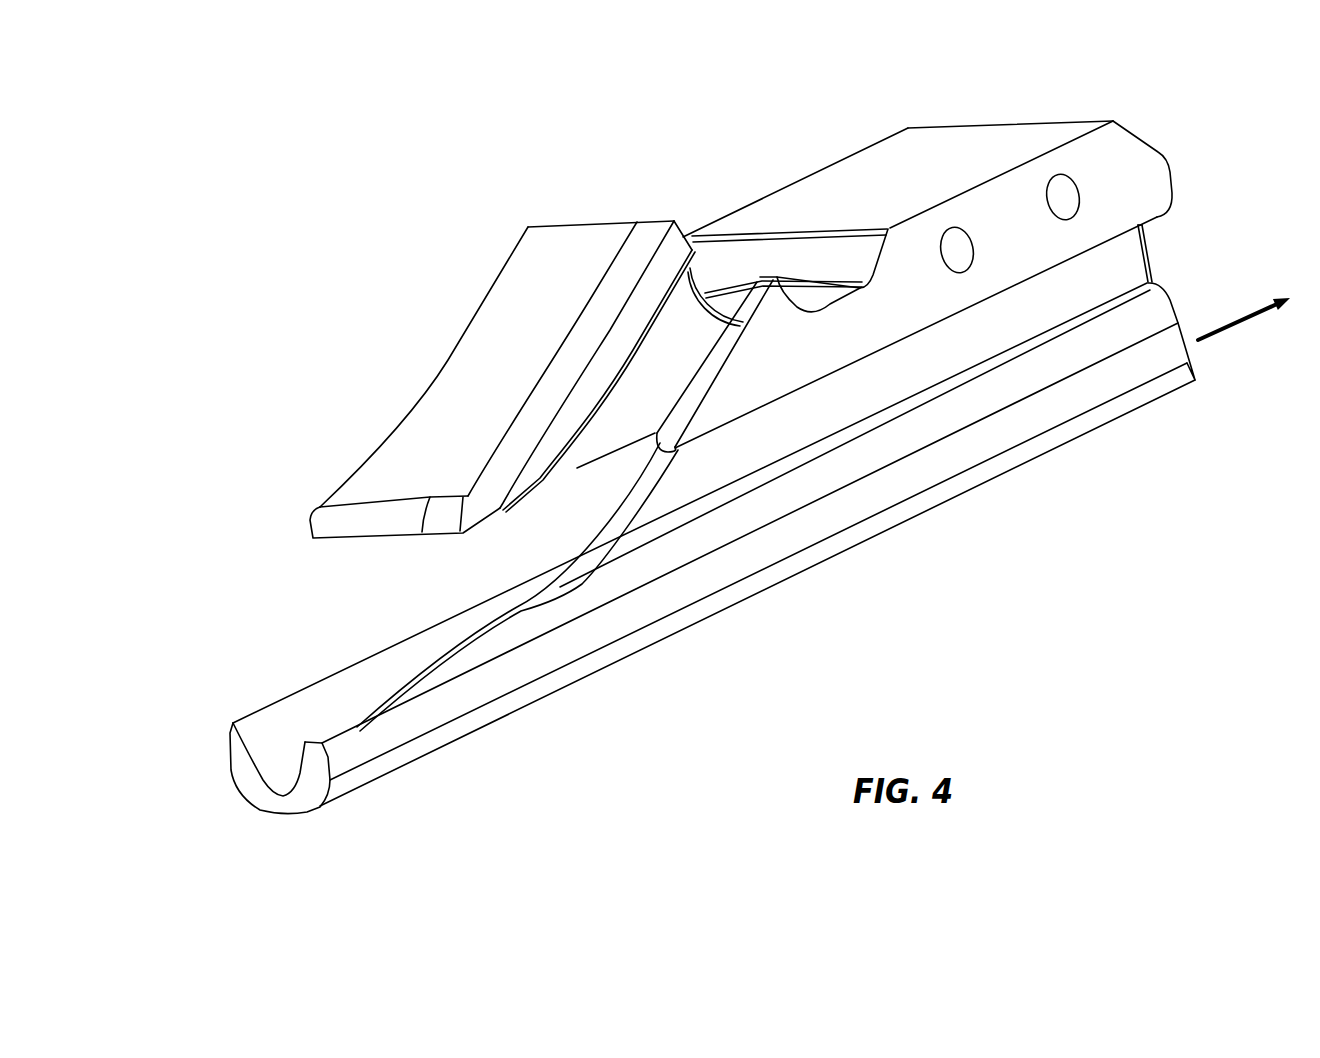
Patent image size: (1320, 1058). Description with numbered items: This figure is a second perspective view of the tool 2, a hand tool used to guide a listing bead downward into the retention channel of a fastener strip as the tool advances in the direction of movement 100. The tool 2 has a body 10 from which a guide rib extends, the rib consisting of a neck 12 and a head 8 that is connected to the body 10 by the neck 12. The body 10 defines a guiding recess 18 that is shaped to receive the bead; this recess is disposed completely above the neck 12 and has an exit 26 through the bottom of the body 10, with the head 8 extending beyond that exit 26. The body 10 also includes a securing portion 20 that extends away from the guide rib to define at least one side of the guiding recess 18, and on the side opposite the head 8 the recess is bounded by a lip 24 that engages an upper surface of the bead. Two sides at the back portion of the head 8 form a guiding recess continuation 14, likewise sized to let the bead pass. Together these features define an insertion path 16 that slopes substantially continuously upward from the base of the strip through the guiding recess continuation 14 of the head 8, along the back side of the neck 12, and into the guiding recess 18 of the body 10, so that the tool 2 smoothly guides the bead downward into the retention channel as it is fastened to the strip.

The tool 2 is at (377, 373).
The head 8 is at (773, 545).
The body 10 is at (993, 143).
The neck 12 is at (1122, 263).
The guiding recess continuation 14 is at (285, 767).
The insertion path 16 is at (583, 550).
The guiding recess 18 is at (698, 325).
The securing portion 20 is at (537, 247).
The lip 24 is at (675, 257).
The exit 26 is at (578, 470).
The direction of movement 100 is at (1230, 322).